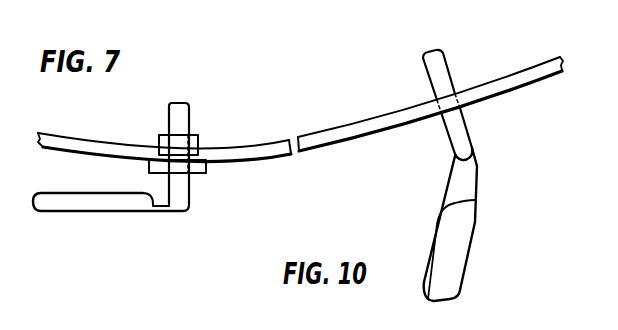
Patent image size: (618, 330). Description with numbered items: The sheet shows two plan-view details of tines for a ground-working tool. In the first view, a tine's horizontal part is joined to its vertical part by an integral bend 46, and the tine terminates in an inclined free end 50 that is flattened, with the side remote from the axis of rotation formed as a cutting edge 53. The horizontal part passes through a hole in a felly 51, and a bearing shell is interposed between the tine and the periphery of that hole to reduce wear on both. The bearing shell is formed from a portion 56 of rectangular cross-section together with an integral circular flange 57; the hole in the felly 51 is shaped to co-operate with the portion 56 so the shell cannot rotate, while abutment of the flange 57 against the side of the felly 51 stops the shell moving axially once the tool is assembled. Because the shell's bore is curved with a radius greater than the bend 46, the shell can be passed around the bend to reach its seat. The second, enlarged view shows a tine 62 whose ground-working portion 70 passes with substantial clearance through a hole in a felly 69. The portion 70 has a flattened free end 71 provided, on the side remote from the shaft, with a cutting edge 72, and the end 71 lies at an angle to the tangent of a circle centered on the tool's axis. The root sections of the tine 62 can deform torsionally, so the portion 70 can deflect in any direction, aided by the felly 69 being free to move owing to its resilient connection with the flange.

In FIG. 10, the integral bend 46 is at (463, 102).
In FIG. 7, the inclined free end 50 is at (75, 209).
In FIG. 7, the felly 51 is at (243, 145).
In FIG. 7, the cutting edge 53 is at (126, 211).
In FIG. 7, the portion of rectangular cross-section 56 is at (160, 138).
In FIG. 7, the circular flange 57 is at (207, 168).
In FIG. 10, the tine 62 is at (430, 81).
In FIG. 10, the felly 69 is at (542, 66).
In FIG. 10, the ground-working portion 70 is at (471, 139).
In FIG. 10, the flattened free end 71 is at (440, 215).
In FIG. 10, the cutting edge 72 is at (471, 249).